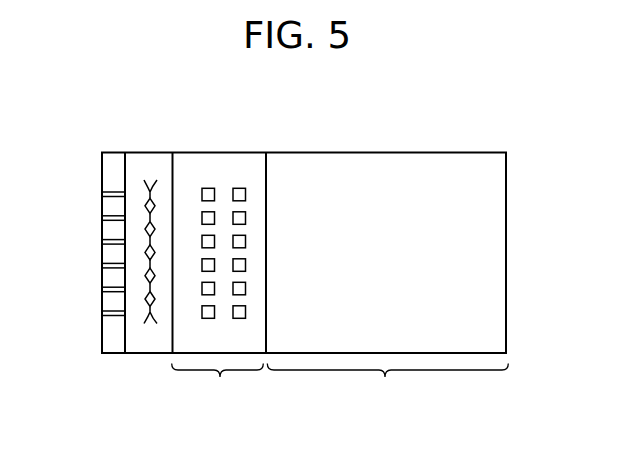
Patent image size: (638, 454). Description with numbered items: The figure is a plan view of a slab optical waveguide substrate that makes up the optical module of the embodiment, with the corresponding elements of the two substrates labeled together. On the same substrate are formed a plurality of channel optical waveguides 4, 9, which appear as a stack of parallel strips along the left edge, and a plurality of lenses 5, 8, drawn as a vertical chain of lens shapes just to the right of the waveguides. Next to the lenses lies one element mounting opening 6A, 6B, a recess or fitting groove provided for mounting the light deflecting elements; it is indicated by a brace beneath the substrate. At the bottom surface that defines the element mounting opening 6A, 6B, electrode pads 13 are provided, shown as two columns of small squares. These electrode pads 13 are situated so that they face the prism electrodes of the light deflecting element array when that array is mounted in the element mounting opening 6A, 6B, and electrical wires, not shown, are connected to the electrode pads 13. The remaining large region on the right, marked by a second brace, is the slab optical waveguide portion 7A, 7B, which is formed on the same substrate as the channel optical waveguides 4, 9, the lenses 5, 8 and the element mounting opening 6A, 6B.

The channel optical waveguides 4 is at (88, 226).
The channel optical waveguides 9 is at (117, 193).
The lenses 5 is at (96, 252).
The lenses 8 is at (147, 281).
The electrode pads 13 is at (239, 188).
The element mounting opening 6A is at (218, 388).
The element mounting opening 6B is at (218, 388).
The slab optical waveguide portion 7A is at (387, 388).
The slab optical waveguide portion 7B is at (387, 388).